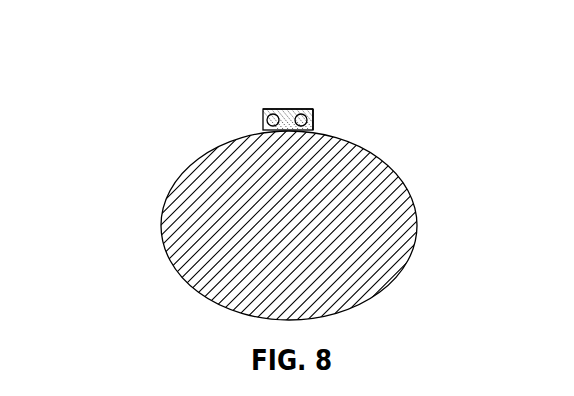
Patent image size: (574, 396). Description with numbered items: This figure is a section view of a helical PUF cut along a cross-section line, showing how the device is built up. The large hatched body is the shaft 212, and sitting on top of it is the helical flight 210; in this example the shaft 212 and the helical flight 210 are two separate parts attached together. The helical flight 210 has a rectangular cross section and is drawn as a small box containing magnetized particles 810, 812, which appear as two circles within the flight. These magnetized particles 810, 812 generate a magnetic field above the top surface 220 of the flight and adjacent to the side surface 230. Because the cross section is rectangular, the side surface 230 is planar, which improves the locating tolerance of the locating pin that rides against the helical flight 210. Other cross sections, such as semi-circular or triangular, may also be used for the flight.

The shaft 212 is at (173, 184).
The helical flight 210 is at (263, 112).
The magnetized particle 810 is at (279, 113).
The magnetized particle 812 is at (304, 117).
The top surface 220 is at (287, 106).
The side surface 230 is at (317, 121).